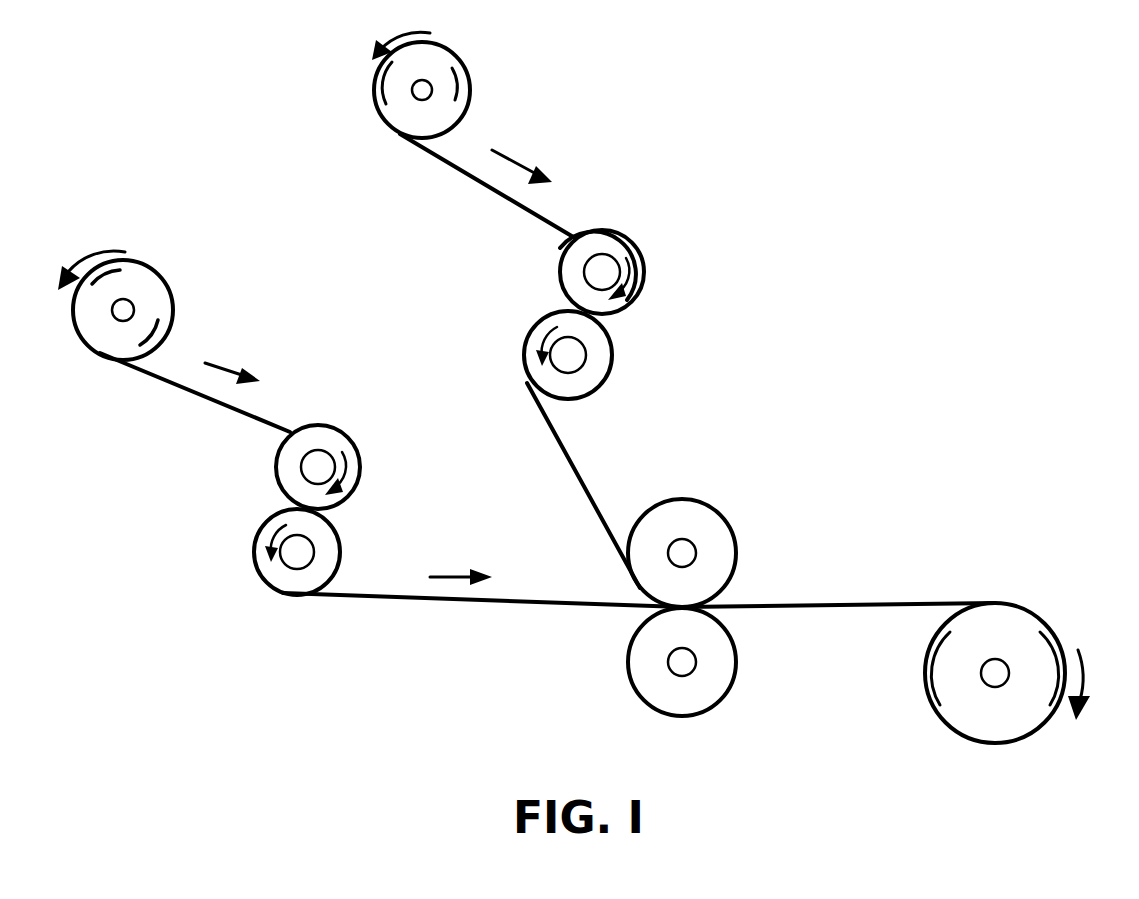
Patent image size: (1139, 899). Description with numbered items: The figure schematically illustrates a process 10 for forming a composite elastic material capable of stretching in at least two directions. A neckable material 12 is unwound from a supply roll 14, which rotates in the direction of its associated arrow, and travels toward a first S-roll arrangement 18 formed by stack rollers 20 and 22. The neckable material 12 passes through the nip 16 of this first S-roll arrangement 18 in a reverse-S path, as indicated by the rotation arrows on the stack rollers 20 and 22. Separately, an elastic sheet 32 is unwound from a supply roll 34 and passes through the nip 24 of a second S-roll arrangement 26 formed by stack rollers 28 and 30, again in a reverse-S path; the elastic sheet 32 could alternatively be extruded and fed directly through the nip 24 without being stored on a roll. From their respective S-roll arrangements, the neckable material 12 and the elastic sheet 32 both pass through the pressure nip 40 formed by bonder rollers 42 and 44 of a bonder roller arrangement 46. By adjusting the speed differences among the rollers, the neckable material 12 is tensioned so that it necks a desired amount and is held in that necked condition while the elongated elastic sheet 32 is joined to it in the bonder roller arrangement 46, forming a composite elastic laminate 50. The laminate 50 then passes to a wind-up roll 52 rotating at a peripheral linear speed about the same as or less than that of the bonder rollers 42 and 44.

The process for forming a composite elastic material 10 is at (928, 70).
The neckable material 12 is at (505, 186).
The supply roll 14 is at (466, 78).
The nip 16 is at (632, 324).
The first S-roll arrangement 18 is at (630, 150).
The stack roller 20 is at (645, 270).
The stack roller 22 is at (598, 375).
The nip 24 is at (352, 510).
The second S-roll arrangement 26 is at (322, 312).
The stack roller 28 is at (356, 463).
The stack roller 30 is at (330, 545).
The elastic sheet 32 is at (226, 400).
The supply roll 34 is at (170, 290).
The pressure nip 40 is at (616, 623).
The bonder roller 42 is at (712, 522).
The bonder roller 44 is at (686, 707).
The bonder roller arrangement 46 is at (784, 512).
The composite elastic laminate 50 is at (868, 605).
The wind-up roll 52 is at (1062, 596).